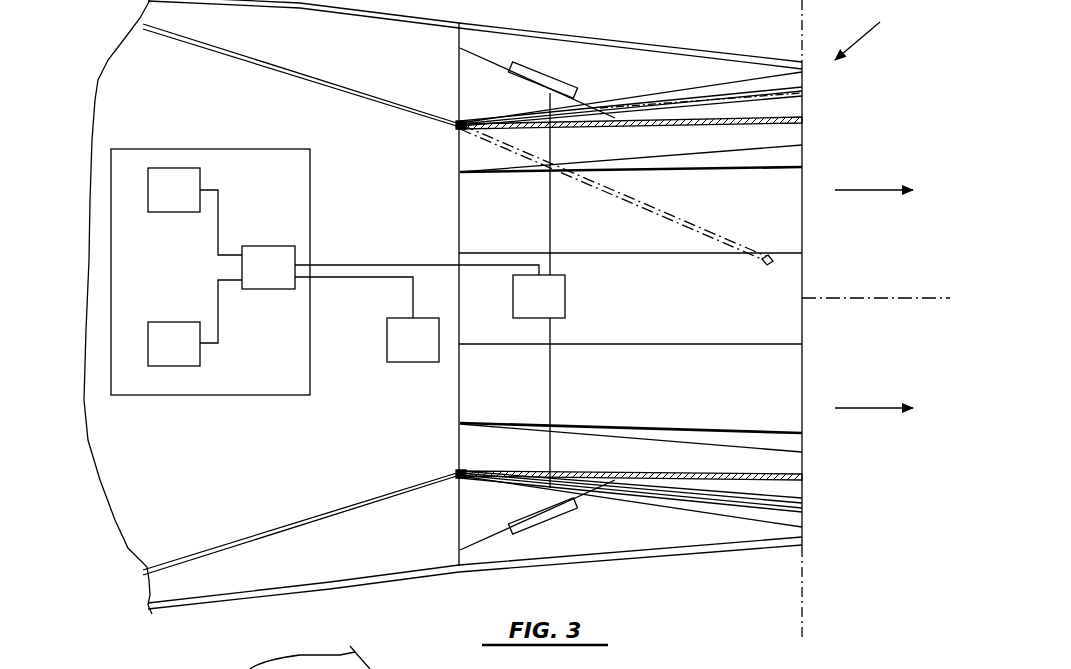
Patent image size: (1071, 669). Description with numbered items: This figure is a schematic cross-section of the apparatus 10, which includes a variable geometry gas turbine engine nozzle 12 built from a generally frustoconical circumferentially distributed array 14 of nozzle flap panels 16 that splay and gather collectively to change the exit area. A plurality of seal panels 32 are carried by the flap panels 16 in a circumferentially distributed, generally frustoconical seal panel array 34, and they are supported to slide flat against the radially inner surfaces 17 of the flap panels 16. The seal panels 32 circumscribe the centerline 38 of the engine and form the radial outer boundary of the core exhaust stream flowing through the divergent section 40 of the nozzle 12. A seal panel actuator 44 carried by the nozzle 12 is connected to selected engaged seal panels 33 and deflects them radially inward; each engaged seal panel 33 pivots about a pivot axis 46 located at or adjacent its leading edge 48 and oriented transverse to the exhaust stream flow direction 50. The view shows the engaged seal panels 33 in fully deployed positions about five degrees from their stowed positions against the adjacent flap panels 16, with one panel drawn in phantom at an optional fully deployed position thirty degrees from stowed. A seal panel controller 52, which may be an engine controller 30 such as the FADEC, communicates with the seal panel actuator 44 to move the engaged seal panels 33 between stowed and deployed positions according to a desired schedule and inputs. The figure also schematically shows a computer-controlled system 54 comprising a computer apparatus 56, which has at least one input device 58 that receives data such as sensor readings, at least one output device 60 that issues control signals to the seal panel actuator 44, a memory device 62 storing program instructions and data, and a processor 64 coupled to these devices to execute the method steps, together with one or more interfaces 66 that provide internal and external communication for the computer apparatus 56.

The apparatus 10 is at (186, 668).
The variable geometry gas turbine engine nozzle 12 is at (738, 49).
The circumferentially distributed array of nozzle flap panels 14 is at (660, 88).
The nozzle flap panels 16 is at (692, 85).
The radially inner surfaces 17 is at (645, 100).
The engine controller 30 is at (210, 240).
The seal panels 32 is at (788, 158).
The engaged seal panels 33 is at (665, 125).
The seal panel array 34 is at (705, 507).
The centerline 38 is at (873, 297).
The divergent section 40 is at (456, 398).
The seal panel actuator 44 is at (558, 70).
The pivot axes 46 is at (467, 123).
The leading edges 48 is at (457, 122).
The exhaust stream flow direction 50 is at (872, 186).
The seal panel controller 52 is at (210, 272).
The computer-controlled system 54 is at (873, 36).
The computer apparatus 56 is at (279, 147).
The input device 58 is at (413, 340).
The output device 60 is at (539, 296).
The memory device 62 is at (174, 190).
The processor 64 is at (174, 344).
The interfaces 66 is at (268, 267).